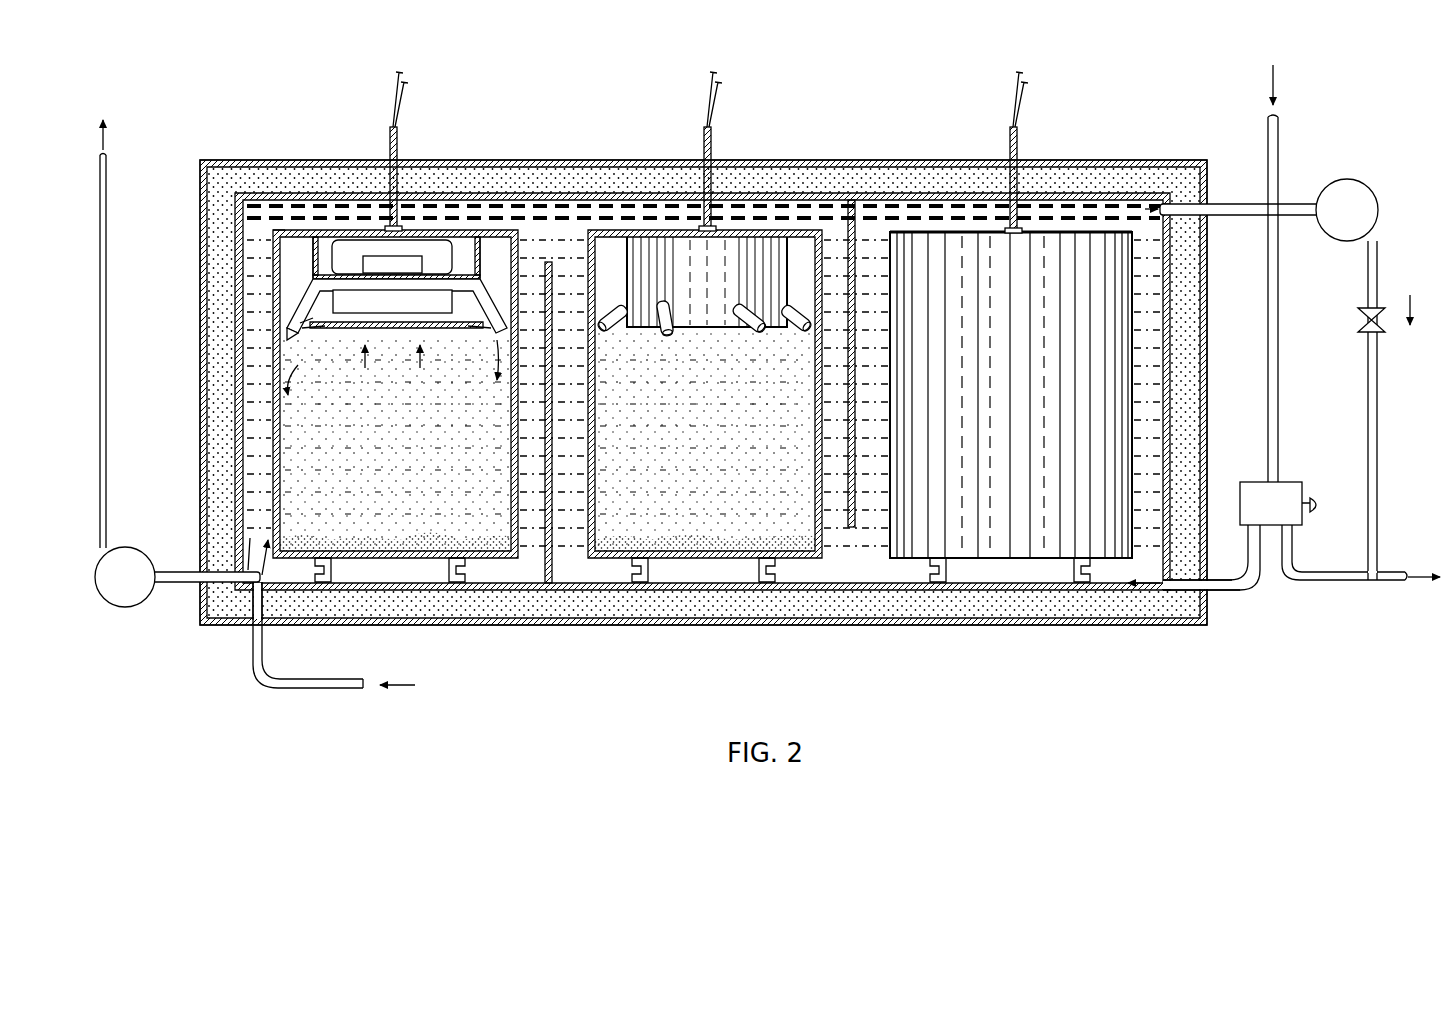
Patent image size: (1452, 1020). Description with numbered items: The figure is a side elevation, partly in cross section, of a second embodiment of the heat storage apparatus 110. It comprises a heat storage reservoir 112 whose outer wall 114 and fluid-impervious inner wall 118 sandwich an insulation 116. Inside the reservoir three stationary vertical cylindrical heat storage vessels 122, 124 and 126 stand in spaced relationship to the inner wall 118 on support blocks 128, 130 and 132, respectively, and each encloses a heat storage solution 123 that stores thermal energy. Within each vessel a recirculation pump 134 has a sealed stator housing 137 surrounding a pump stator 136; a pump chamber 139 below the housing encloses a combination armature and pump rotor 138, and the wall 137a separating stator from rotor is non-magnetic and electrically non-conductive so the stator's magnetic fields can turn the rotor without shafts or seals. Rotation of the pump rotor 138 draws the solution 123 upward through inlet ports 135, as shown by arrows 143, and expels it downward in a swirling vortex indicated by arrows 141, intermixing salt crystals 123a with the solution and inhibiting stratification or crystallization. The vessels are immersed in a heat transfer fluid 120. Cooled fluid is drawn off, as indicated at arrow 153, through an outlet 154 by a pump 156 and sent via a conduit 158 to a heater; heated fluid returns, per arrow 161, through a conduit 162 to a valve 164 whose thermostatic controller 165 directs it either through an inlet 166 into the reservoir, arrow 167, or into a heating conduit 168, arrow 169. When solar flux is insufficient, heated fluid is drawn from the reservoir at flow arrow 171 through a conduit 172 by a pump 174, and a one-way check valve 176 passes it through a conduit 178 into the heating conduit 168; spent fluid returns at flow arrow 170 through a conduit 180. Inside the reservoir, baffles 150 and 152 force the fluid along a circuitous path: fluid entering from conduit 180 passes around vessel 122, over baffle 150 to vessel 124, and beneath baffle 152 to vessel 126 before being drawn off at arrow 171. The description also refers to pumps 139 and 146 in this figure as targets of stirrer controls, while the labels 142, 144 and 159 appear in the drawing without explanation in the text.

The heat storage apparatus 110 is at (1092, 158).
The heat storage reservoir 112 is at (758, 160).
The outer wall 114 is at (818, 183).
The insulation 116 is at (885, 192).
The inner wall 118 is at (940, 210).
The heat transfer fluid 120 is at (550, 238).
The heat storage vessel 122 is at (284, 230).
The heat storage solution 123 is at (290, 435).
The salt crystals 123a is at (450, 533).
The heat storage vessel 124 is at (630, 234).
The heat storage vessel 126 is at (1022, 560).
The support block 128 is at (328, 572).
The support block 130 is at (648, 575).
The support block 132 is at (947, 575).
The recirculation pump 134 is at (340, 236).
The inlet ports 135 is at (430, 340).
The pump stator 136 is at (355, 245).
The stator housing 137 is at (488, 238).
The wall 137a is at (478, 252).
The pump rotor 138 is at (410, 315).
The pump chamber 139 is at (300, 273).
The arrows 141 is at (305, 350).
The flow arrow 142 is at (378, 330).
The arrows 143 is at (430, 335).
The support rod 144 is at (406, 82).
The pump 146 is at (713, 328).
The baffle 150 is at (560, 575).
The baffle 152 is at (855, 522).
The arrow 153 is at (250, 535).
The outlet 154 is at (178, 583).
The pump 156 is at (125, 600).
The conduit 158 is at (107, 300).
The outlet arrow 159 is at (110, 125).
The arrow 161 is at (1280, 80).
The conduit 162 is at (1280, 290).
The valve 164 is at (1288, 482).
The controller 165 is at (1318, 500).
The inlet 166 is at (1240, 592).
The arrow 167 is at (1155, 600).
The heating conduit 168 is at (1360, 583).
The arrow 169 is at (1420, 570).
The flow arrow 170 is at (405, 695).
The flow arrow 171 is at (1140, 205).
The conduit 172 is at (1295, 203).
The pump 174 is at (1368, 195).
The valve 176 is at (1380, 325).
The conduit 178 is at (1378, 450).
The conduit 180 is at (310, 688).